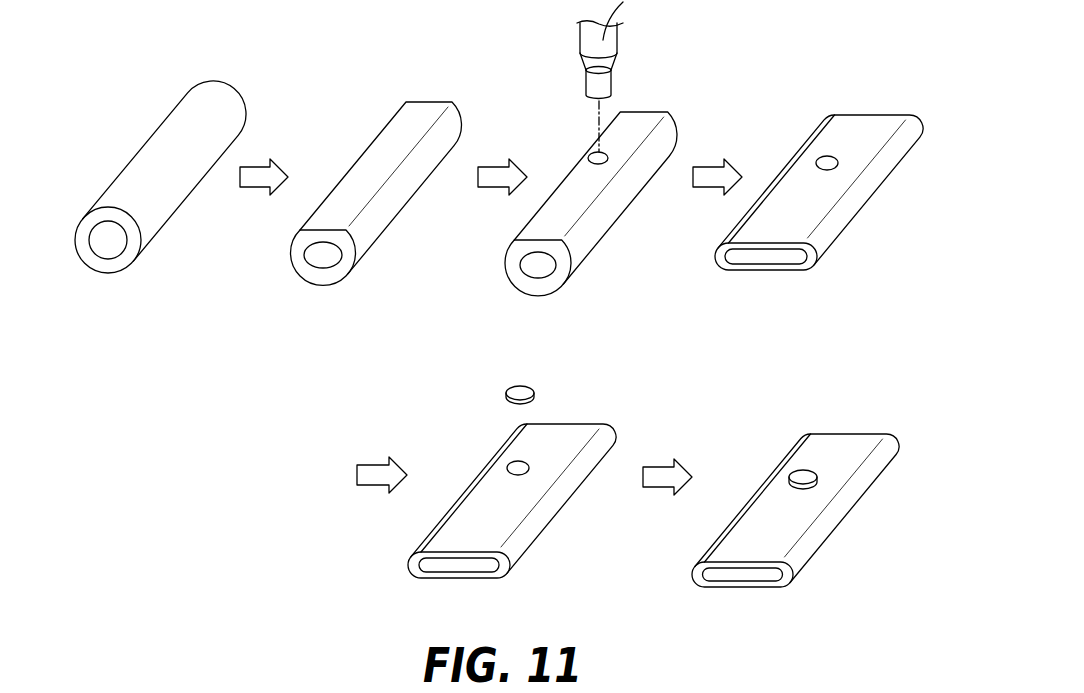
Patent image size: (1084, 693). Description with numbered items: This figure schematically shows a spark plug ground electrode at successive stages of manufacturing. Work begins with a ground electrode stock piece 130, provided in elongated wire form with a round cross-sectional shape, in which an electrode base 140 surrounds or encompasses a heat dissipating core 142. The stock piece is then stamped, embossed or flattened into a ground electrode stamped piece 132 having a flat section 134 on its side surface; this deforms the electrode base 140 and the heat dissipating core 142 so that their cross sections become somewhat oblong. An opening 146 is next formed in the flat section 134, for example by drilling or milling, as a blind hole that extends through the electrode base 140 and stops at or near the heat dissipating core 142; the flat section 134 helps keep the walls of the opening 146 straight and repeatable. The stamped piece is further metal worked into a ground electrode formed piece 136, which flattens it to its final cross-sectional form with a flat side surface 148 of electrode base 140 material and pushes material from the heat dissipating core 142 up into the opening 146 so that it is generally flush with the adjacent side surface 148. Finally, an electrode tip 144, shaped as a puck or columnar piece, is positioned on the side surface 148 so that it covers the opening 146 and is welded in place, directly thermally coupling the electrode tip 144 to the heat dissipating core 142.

The ground electrode stock piece 130 is at (237, 73).
The ground electrode stamped piece 132 is at (443, 67).
The flat section 134 is at (380, 150).
The ground electrode formed piece 136 is at (867, 72).
The electrode base 140 is at (127, 262).
The heat dissipating core 142 is at (103, 249).
The electrode tip 144 is at (506, 398).
The opening 146 is at (610, 157).
The side surface 148 is at (880, 126).